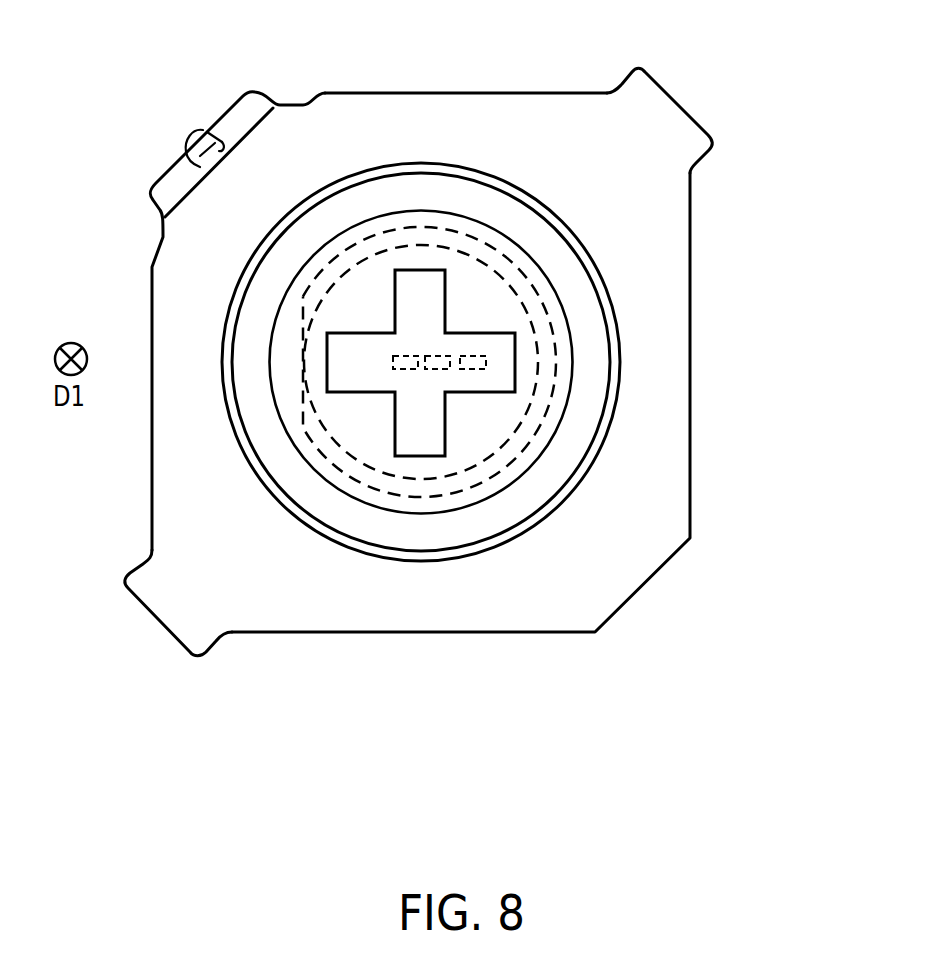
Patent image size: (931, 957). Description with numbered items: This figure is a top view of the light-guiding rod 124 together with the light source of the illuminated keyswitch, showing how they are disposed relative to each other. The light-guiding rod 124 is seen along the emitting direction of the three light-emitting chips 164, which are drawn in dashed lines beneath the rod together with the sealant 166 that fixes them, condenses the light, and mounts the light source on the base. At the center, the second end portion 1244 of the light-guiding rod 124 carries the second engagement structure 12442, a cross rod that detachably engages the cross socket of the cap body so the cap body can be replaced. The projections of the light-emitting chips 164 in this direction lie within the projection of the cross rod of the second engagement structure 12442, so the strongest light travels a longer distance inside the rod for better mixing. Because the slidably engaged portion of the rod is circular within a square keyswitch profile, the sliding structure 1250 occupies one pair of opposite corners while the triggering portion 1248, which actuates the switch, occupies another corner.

The light-guiding rod 124 is at (672, 338).
The sliding structure 1250 is at (667, 112).
The triggering portion 1248 is at (238, 121).
The second end portion 1244 is at (583, 305).
The second engagement structure 12442 is at (432, 287).
The sealant 166 is at (535, 395).
The light-emitting chips 164 is at (400, 371).